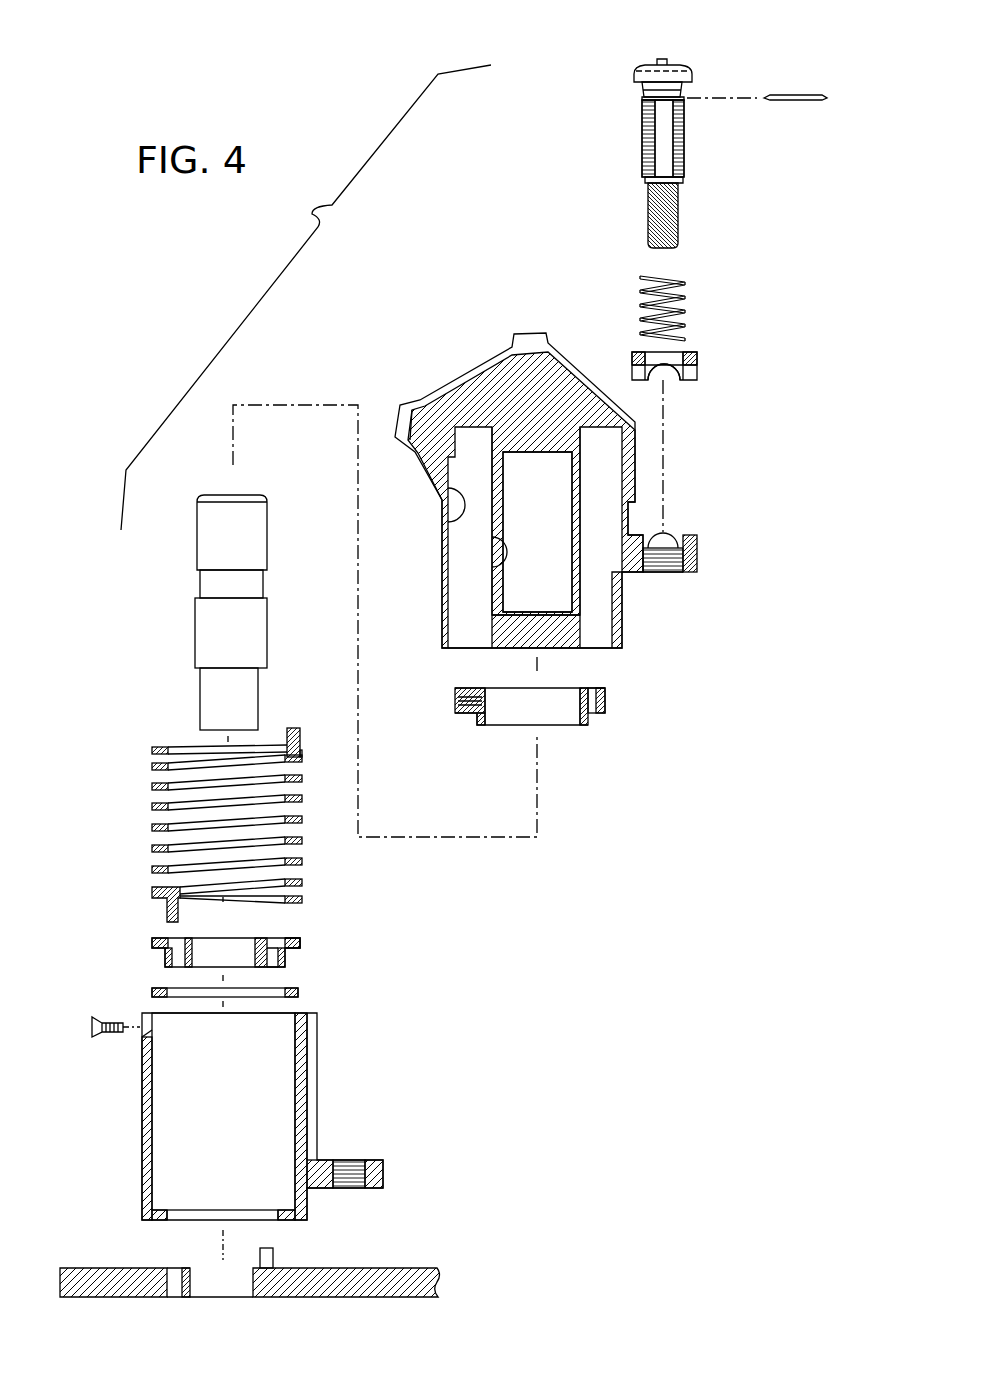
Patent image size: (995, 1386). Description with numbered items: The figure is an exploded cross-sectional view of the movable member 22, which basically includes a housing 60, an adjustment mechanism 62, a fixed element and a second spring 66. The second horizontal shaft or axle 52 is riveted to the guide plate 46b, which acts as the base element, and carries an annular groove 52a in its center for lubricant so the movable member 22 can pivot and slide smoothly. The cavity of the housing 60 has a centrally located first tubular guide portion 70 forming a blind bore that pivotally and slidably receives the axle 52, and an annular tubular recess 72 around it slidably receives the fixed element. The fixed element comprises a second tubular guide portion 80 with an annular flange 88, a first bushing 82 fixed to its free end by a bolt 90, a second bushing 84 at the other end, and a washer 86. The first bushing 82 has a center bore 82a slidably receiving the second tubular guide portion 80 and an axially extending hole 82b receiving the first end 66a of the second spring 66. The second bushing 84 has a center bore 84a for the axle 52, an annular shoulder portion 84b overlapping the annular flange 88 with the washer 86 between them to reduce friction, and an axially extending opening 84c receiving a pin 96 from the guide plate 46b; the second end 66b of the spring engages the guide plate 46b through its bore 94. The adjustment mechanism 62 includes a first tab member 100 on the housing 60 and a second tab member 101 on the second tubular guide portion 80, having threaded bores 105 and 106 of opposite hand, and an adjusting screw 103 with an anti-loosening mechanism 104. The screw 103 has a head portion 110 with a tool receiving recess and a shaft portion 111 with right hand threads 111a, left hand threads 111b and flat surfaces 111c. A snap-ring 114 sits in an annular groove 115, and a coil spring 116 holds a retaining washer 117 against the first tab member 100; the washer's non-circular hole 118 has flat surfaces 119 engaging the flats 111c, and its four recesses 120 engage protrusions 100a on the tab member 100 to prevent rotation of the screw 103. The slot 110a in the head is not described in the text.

The movable member 22 is at (425, 364).
The guide plate 46b is at (399, 1266).
The second horizontal shaft or axle 52 is at (195, 546).
The annular groove 52a is at (259, 588).
The housing 60 is at (478, 353).
The adjustment mechanism 62 is at (796, 165).
The second spring 66 is at (142, 830).
The first end of the second spring 66a is at (293, 727).
The second end of the second spring 66b is at (168, 906).
The first tubular guide portion 70 is at (510, 575).
The annular tubular recess 72 is at (447, 525).
The second tubular guide portion 80 is at (142, 1087).
The first bushing 82 is at (615, 705).
The center bore 82a is at (568, 724).
The axially extending hole 82b is at (594, 688).
The second bushing 84 is at (321, 943).
The center bore 84a is at (252, 946).
The annular shoulder portion 84b is at (298, 947).
The axially extending opening 84c is at (274, 962).
The washer 86 is at (299, 992).
The annular flange 88 is at (157, 1219).
The bolt 90 is at (88, 1027).
The bore 94 is at (168, 1288).
The pin 96 is at (276, 1258).
The first tab member 100 is at (698, 560).
The protrusions 100a is at (690, 533).
The second tab member 101 is at (385, 1173).
The adjusting screw 103 is at (680, 52).
The anti-loosening mechanism 104 is at (800, 304).
The threaded bore 105 is at (672, 573).
The threaded bore 106 is at (358, 1160).
The head portion 110 is at (694, 68).
The head slot 110a is at (660, 60).
The shaft portion 111 is at (692, 181).
The first set of right hand threads 111a is at (643, 157).
The second set of left hand threads 111b is at (648, 210).
The flat surfaces 111c is at (665, 157).
The snap-ring 114 is at (803, 90).
The annular groove 115 is at (642, 97).
The coil spring 116 is at (688, 292).
The retaining washer 117 is at (697, 358).
The non-circular hole 118 is at (646, 351).
The flat surfaces 119 is at (673, 351).
The recesses 120 is at (670, 382).